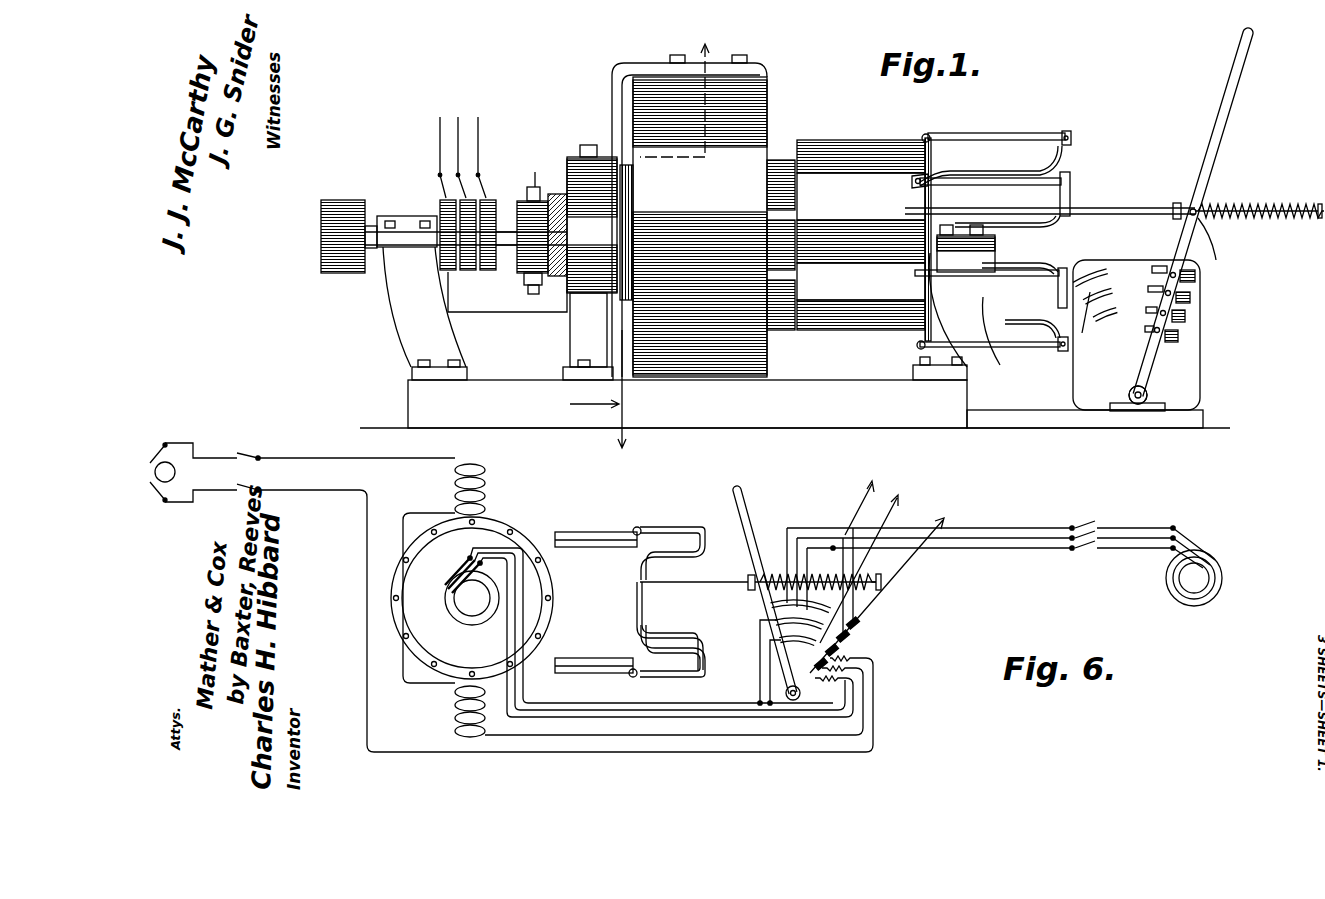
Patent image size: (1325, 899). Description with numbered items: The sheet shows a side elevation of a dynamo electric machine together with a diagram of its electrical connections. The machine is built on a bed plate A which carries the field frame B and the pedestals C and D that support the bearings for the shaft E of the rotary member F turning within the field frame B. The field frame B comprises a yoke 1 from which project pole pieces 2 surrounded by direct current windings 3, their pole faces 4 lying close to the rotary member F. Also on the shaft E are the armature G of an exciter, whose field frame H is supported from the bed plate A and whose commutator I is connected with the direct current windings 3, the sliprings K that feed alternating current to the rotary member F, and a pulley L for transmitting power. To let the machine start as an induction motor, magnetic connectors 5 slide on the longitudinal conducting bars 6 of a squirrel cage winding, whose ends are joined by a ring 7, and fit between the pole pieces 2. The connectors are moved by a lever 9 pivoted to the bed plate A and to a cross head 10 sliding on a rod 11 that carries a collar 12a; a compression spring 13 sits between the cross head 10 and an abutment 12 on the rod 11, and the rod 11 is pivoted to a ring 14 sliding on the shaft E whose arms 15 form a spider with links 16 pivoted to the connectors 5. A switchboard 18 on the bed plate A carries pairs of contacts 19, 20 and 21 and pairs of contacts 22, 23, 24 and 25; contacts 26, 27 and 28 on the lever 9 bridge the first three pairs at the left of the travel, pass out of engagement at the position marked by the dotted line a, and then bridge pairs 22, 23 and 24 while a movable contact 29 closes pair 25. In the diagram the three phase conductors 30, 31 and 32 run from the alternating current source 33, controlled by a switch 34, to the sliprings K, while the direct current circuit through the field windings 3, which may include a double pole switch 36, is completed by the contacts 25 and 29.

In FIG. 1, the bed plate A is at (687, 404).
In FIG. 1, the field frame B is at (689, 216).
In FIG. 1, the pedestal C is at (398, 330).
In FIG. 1, the pedestal D is at (960, 356).
In FIG. 1, the shaft E is at (507, 258).
In FIG. 1, the rotary member F is at (632, 167).
In FIG. 1, the armature of exciter G is at (557, 283).
In FIG. 1, the field frame of exciter H is at (590, 262).
In FIG. 6, the field frame of exciter H is at (180, 446).
In FIG. 1, the commutator I is at (522, 200).
In FIG. 1, the sliprings K is at (447, 274).
In FIG. 6, the sliprings K is at (466, 612).
In FIG. 1, the pulley L is at (336, 268).
In FIG. 6, the yoke 1 is at (734, 475).
In FIG. 1, the pole pieces 2 is at (640, 250).
In FIG. 6, the pole pieces 2 is at (863, 499).
In FIG. 6, the direct current windings 3 is at (645, 600).
In FIG. 6, the pole faces 4 is at (882, 588).
In FIG. 1, the magnetic connectors 5 is at (862, 346).
In FIG. 6, the magnetic connectors 5 is at (594, 532).
In FIG. 1, the conducting bars 6 is at (781, 172).
In FIG. 1, the ring 7 is at (931, 170).
In FIG. 1, the lever 9 is at (1230, 115).
In FIG. 6, the lever 9 is at (754, 540).
In FIG. 1, the cross head 10 is at (1202, 273).
In FIG. 1, the rod 11 is at (1150, 218).
In FIG. 6, the rod 11 is at (718, 583).
In FIG. 1, the abutment 12 is at (1261, 193).
In FIG. 6, the abutment 12 is at (882, 582).
In FIG. 1, the collar 12a is at (1175, 205).
In FIG. 6, the collar 12a is at (750, 576).
In FIG. 1, the compression spring 13 is at (1278, 218).
In FIG. 6, the compression spring 13 is at (868, 580).
In FIG. 1, the ring 14 is at (935, 258).
In FIG. 6, the ring 14 is at (643, 608).
In FIG. 1, the arms 15 is at (997, 178).
In FIG. 6, the arms 15 is at (673, 605).
In FIG. 1, the links 16 is at (996, 136).
In FIG. 6, the links 16 is at (680, 525).
In FIG. 1, the switchboard 18 is at (1195, 363).
In FIG. 1, the pair of contacts 19 is at (1093, 276).
In FIG. 6, the pair of contacts 19 is at (772, 603).
In FIG. 1, the pair of contacts 20 is at (1093, 327).
In FIG. 6, the pair of contacts 20 is at (760, 620).
In FIG. 1, the pair of contacts 21 is at (1117, 307).
In FIG. 6, the pair of contacts 21 is at (779, 641).
In FIG. 1, the pair of contacts 22 is at (1200, 293).
In FIG. 6, the pair of contacts 22 is at (862, 622).
In FIG. 1, the pair of contacts 23 is at (1200, 313).
In FIG. 6, the pair of contacts 23 is at (852, 636).
In FIG. 1, the pair of contacts 24 is at (1202, 333).
In FIG. 6, the pair of contacts 24 is at (842, 652).
In FIG. 1, the pair of contacts 25 is at (1177, 339).
In FIG. 6, the pair of contacts 25 is at (820, 670).
In FIG. 1, the movable contact 26 is at (1168, 267).
In FIG. 1, the movable contact 27 is at (1141, 309).
In FIG. 1, the movable contact 28 is at (1140, 333).
In FIG. 1, the movable contact 29 is at (1134, 388).
In FIG. 6, the three phase conductor 30 is at (1010, 528).
In FIG. 6, the three phase conductor 31 is at (1017, 540).
In FIG. 6, the three phase conductor 32 is at (1056, 549).
In FIG. 6, the source of alternating current 33 is at (1180, 592).
In FIG. 6, the switch 34 is at (1082, 527).
In FIG. 6, the double pole switch 36 is at (252, 494).
In FIG. 6, the dotted line a is at (866, 558).